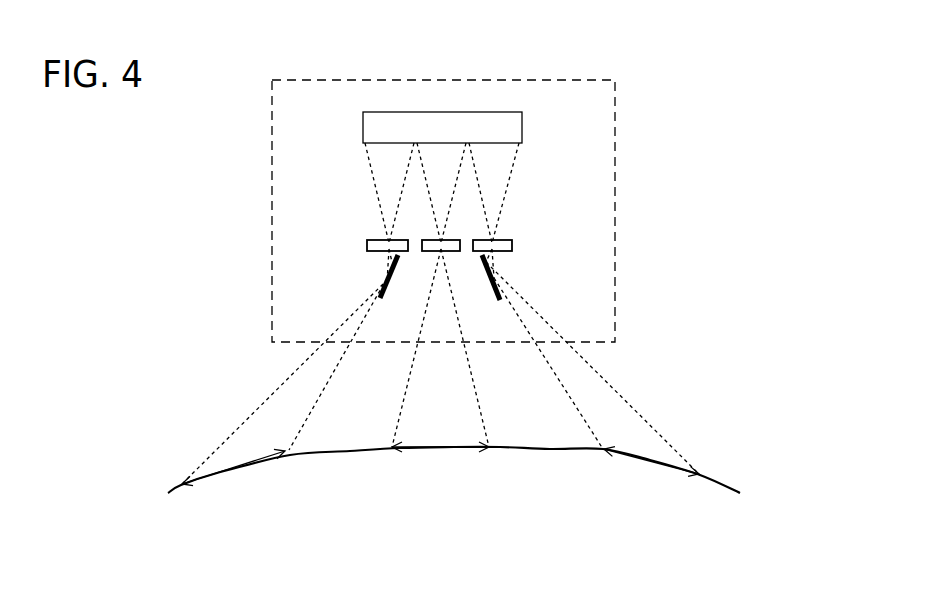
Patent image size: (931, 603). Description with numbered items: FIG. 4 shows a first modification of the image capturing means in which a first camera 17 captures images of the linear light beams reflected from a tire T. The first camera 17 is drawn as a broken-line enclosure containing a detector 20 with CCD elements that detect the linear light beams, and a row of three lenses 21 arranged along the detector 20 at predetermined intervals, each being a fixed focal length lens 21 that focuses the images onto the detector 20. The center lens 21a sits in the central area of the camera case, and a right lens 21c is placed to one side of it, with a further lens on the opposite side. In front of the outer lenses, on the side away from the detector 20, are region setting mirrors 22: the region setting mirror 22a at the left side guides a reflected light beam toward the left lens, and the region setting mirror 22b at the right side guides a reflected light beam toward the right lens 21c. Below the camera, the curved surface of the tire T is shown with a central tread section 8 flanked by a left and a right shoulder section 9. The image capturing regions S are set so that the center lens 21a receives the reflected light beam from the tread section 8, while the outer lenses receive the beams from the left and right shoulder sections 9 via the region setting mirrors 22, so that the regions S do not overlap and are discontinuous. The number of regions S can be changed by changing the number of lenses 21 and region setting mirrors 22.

The first camera 17 is at (562, 78).
The detector 20 is at (524, 126).
The lens 21 is at (480, 209).
The center lens 21a is at (457, 240).
The right lens 21c is at (493, 240).
The region setting mirror 22 is at (436, 257).
The region setting mirror at the left side 22a is at (393, 258).
The region setting mirror at the right side 22b is at (512, 268).
The tread section 8 is at (527, 454).
The shoulder section 9 is at (242, 468).
The image capturing region S is at (208, 466).
The tire T is at (719, 482).